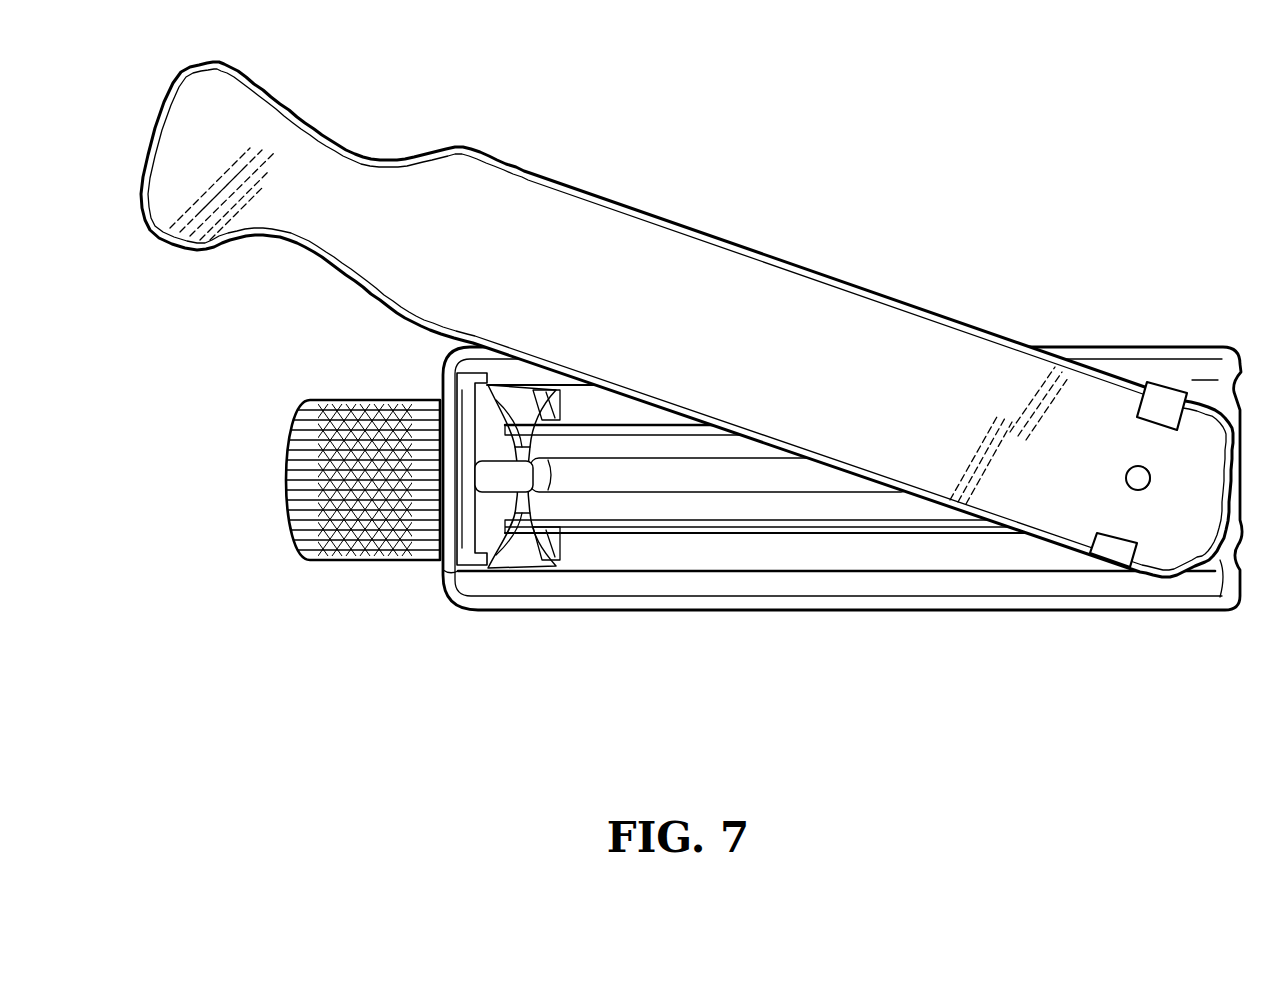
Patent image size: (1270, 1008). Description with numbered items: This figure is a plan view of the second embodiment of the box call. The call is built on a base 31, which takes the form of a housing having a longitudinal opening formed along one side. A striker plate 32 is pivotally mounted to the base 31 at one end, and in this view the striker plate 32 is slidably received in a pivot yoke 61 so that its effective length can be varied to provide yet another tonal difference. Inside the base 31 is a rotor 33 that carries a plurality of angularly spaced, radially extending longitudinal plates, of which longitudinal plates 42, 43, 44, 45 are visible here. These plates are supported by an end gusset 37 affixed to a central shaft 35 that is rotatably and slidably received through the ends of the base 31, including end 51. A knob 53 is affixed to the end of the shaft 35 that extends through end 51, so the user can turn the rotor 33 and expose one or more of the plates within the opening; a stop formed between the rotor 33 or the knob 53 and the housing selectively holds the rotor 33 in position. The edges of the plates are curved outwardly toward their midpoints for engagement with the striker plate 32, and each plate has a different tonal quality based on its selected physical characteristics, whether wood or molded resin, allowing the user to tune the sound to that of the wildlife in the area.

The base 31 is at (900, 600).
The striker plate 32 is at (700, 265).
The rotor 33 is at (763, 617).
The shaft 35 is at (498, 474).
The end gusset 37 is at (541, 549).
The longitudinal plate 42 is at (590, 563).
The longitudinal plate 43 is at (690, 523).
The longitudinal plate 44 is at (671, 458).
The longitudinal plate 45 is at (566, 421).
The end 51 is at (473, 548).
The knob 53 is at (337, 551).
The pivot yoke 61 is at (1153, 410).